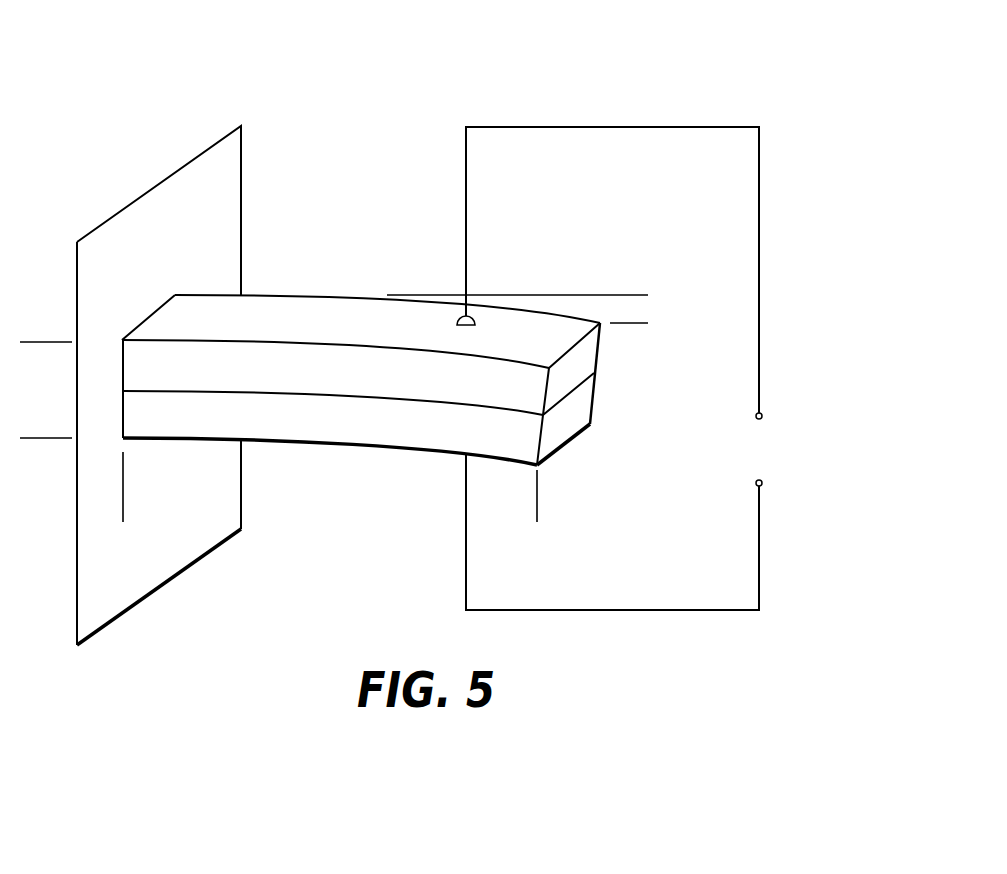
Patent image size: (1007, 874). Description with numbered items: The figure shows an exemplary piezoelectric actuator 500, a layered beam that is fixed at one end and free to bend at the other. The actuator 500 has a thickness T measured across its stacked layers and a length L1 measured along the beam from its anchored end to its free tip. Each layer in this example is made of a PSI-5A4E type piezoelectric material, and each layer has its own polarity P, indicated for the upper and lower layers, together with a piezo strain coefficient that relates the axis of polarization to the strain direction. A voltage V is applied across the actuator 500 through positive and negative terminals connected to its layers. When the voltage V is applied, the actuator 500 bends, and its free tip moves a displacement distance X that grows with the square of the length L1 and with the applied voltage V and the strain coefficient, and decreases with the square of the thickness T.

The piezoelectric actuator 500 is at (722, 90).
The voltage V is at (772, 449).
The polarity P is at (297, 405).
The thickness T is at (51, 350).
The length L1 is at (527, 500).
The displacement distance Δ X is at (541, 307).